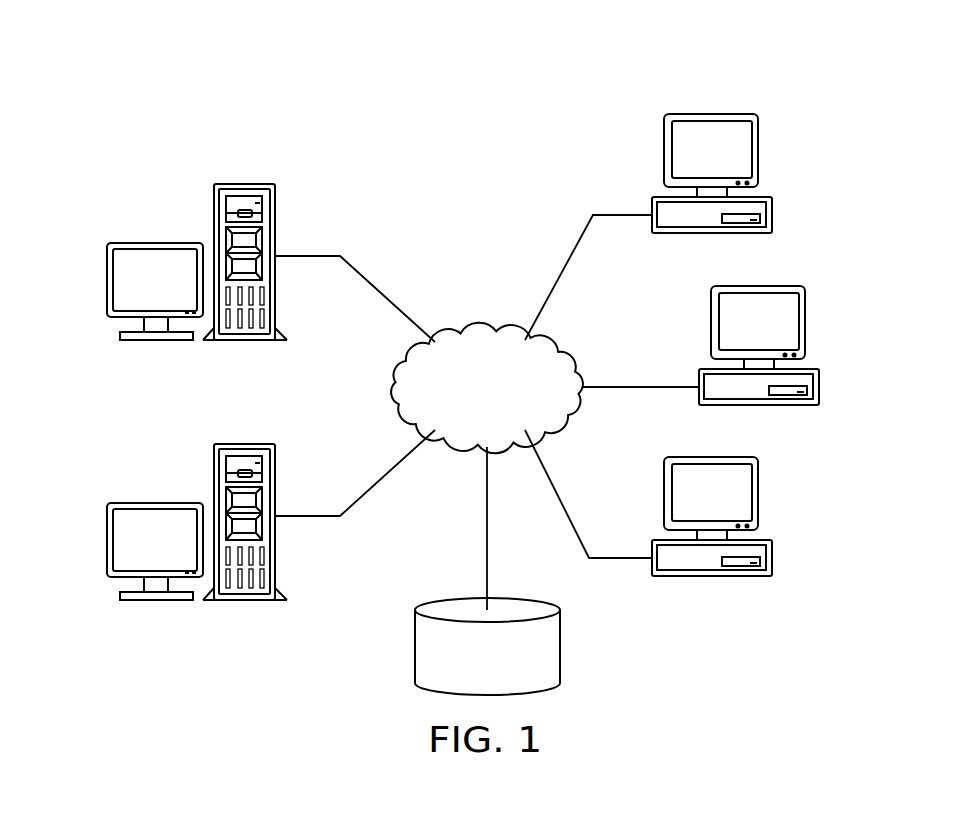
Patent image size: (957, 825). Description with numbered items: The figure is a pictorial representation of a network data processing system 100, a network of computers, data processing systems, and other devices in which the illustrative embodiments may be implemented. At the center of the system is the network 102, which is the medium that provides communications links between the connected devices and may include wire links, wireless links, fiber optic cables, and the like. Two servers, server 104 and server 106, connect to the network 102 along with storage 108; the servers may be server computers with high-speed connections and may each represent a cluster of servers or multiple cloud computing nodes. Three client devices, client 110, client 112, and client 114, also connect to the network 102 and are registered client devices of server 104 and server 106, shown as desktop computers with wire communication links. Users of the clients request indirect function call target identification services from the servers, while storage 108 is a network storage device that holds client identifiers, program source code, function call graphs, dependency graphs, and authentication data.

The network data processing system 100 is at (347, 77).
The network 102 is at (460, 333).
The server 104 is at (108, 278).
The server 106 is at (108, 538).
The storage 108 is at (415, 645).
The client 110 is at (772, 205).
The client 112 is at (819, 397).
The client 114 is at (772, 568).